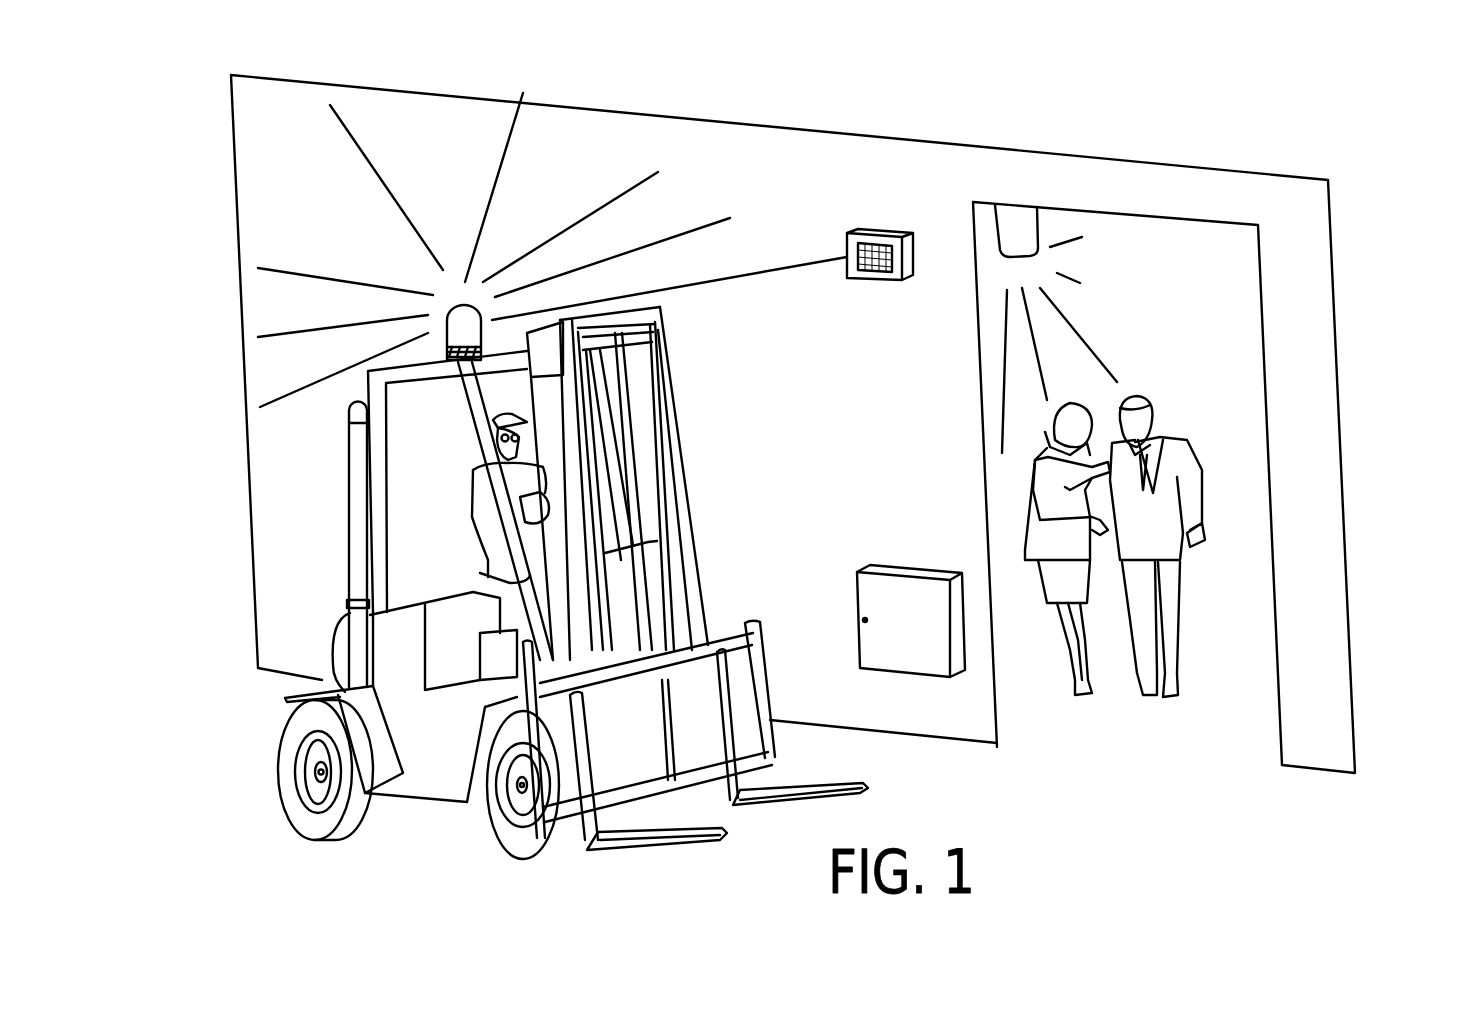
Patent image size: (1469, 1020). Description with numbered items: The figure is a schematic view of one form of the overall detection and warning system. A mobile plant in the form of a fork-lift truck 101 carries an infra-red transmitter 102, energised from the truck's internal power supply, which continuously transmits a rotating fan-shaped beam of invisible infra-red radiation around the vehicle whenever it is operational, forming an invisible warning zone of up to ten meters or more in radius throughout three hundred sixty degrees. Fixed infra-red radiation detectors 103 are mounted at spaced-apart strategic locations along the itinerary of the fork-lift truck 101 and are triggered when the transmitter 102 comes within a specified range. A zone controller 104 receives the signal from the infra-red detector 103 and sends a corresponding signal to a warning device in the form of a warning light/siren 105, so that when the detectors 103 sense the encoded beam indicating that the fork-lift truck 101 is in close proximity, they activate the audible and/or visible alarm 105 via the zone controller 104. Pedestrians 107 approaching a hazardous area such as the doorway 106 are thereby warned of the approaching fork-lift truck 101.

The fork-lift truck 101 is at (283, 742).
The infra-red transmitter 102 is at (443, 325).
The fixed infra-red radiation detector 103 is at (876, 230).
The zone controller 104 is at (908, 642).
The warning light/siren 105 is at (1025, 227).
The doorway 106 is at (1260, 282).
The pedestrians 107 is at (1195, 482).